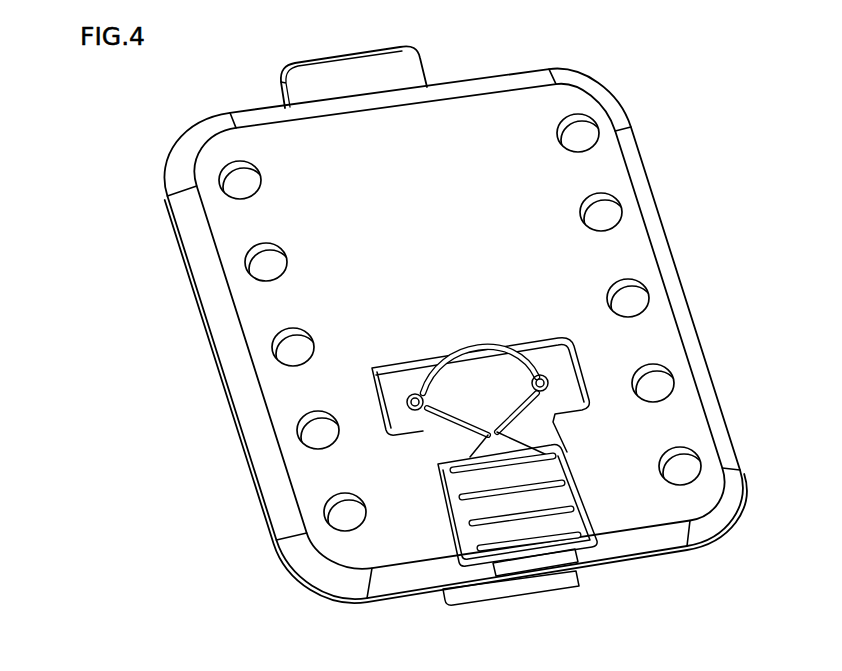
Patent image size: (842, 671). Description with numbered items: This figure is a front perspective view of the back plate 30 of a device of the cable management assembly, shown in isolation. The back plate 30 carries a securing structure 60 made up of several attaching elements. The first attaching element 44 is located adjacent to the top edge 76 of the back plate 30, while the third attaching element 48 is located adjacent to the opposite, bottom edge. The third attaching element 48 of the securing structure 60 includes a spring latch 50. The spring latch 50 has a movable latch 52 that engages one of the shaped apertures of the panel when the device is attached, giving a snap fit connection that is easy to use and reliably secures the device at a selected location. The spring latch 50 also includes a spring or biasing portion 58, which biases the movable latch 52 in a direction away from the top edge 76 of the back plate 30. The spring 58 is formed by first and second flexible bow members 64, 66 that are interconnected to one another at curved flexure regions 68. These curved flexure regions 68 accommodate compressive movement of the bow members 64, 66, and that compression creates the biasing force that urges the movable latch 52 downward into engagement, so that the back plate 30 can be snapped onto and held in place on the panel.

The back plate 30 is at (137, 113).
The first attaching element 44 is at (455, 63).
The third attaching element 48 is at (598, 583).
The spring latch 50 is at (600, 430).
The movable latch 52 is at (466, 608).
The spring or biasing portion 58 is at (509, 357).
The securing structure 60 is at (428, 52).
The first flexible bow member 64 is at (475, 351).
The second flexible bow member 66 is at (423, 434).
The curved flexure regions 68 is at (409, 403).
The top edge 76 is at (244, 112).